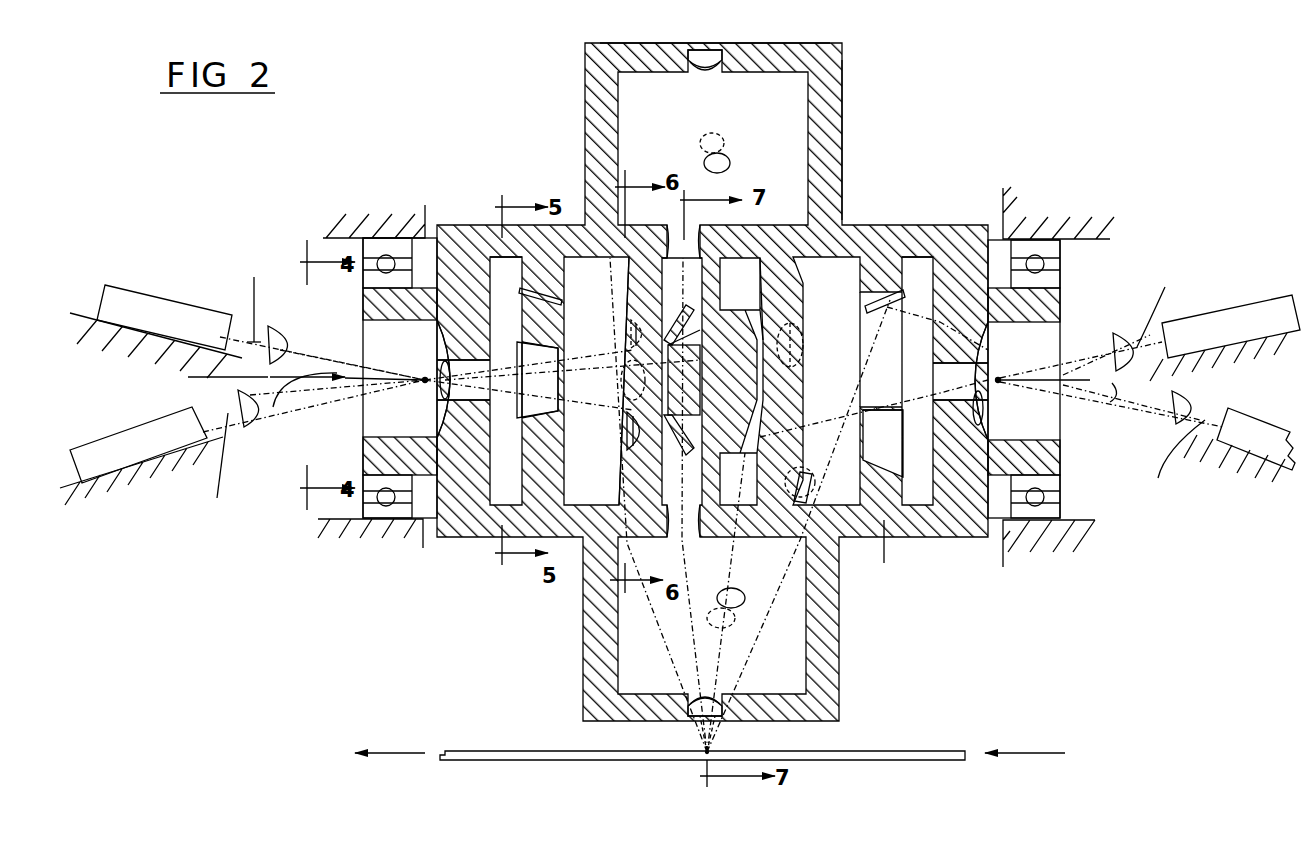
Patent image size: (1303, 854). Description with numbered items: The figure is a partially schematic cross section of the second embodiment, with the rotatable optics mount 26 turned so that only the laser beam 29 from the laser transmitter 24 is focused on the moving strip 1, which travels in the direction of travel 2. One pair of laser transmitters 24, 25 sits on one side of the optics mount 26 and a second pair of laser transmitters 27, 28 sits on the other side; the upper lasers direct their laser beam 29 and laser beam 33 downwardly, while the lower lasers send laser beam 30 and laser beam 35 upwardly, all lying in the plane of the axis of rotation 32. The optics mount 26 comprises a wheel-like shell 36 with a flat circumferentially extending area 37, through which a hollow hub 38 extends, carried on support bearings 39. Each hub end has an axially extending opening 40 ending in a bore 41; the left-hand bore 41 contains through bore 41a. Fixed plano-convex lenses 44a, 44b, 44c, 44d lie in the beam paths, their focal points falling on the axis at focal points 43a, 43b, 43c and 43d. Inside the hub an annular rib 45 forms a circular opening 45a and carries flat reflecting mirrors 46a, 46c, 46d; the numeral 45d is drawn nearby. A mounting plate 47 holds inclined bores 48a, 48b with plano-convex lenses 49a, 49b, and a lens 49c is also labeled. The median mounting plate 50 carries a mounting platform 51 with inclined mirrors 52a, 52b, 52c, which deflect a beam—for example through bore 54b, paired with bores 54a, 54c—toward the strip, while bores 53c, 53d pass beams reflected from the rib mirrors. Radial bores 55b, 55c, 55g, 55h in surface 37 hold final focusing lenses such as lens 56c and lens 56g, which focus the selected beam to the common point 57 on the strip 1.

The strip 1 is at (850, 758).
The direction of travel 2 is at (405, 753).
The laser transmitter 24 is at (135, 300).
The laser transmitter 25 is at (133, 438).
The optics mount 26 is at (583, 103).
The laser transmitter 27 is at (1222, 317).
The laser transmitter 28 is at (1250, 445).
The laser beam 29 is at (256, 297).
The laser beam 30 is at (208, 464).
The axis of rotation 32 is at (352, 383).
The laser beam 33 is at (1156, 310).
The laser beam 35 is at (1181, 457).
The shell 36 is at (843, 117).
The flat circumferentially extending area 37 is at (790, 44).
The hub 38 is at (470, 228).
The support bearings 39 is at (374, 246).
The axially extending opening 40 is at (367, 427).
The axially extending bore 41 is at (473, 417).
The through bore 41a is at (438, 393).
The focal point 43a is at (273, 402).
The focal point 43b is at (425, 380).
The focal point 43c is at (1112, 383).
The focal point 43d is at (999, 364).
The plano-convex lens 44a is at (247, 428).
The plano-convex lens 44b is at (283, 341).
The plano-convex lens 44c is at (1190, 400).
The plano-convex lens 44d is at (1122, 337).
The annular rib 45 is at (560, 290).
The circular opening 45a is at (562, 304).
The mirror 45d is at (872, 350).
The flat reflecting mirror 46a is at (550, 379).
The flat reflecting mirror 46c is at (857, 378).
The flat reflecting mirror 46d is at (868, 305).
The mounting plate 47 is at (633, 270).
The bore 48a is at (628, 328).
The bore 48b is at (617, 420).
The plano-convex lens 49a is at (630, 343).
The plano-convex lens 49b is at (623, 440).
The lens 49c is at (802, 330).
The mounting plate 50 is at (707, 275).
The mounting platform 51 is at (722, 389).
The flat reflecting mirror 52a is at (686, 325).
The flat reflecting mirror 52b is at (680, 428).
The flat reflecting mirror 52c is at (680, 352).
The bore 53c is at (960, 520).
The bore 53d is at (812, 482).
The bore 54a is at (668, 232).
The bore 54b is at (677, 513).
The bore 54c is at (748, 262).
The radially extending bore 55b is at (731, 163).
The radially extending bore 55c is at (712, 55).
The radially extending bore 55g is at (685, 693).
The radially extending bore 55h is at (757, 585).
The plano-convex lens 56c is at (690, 52).
The plano-convex lens 56g is at (697, 717).
The point 57 is at (705, 757).